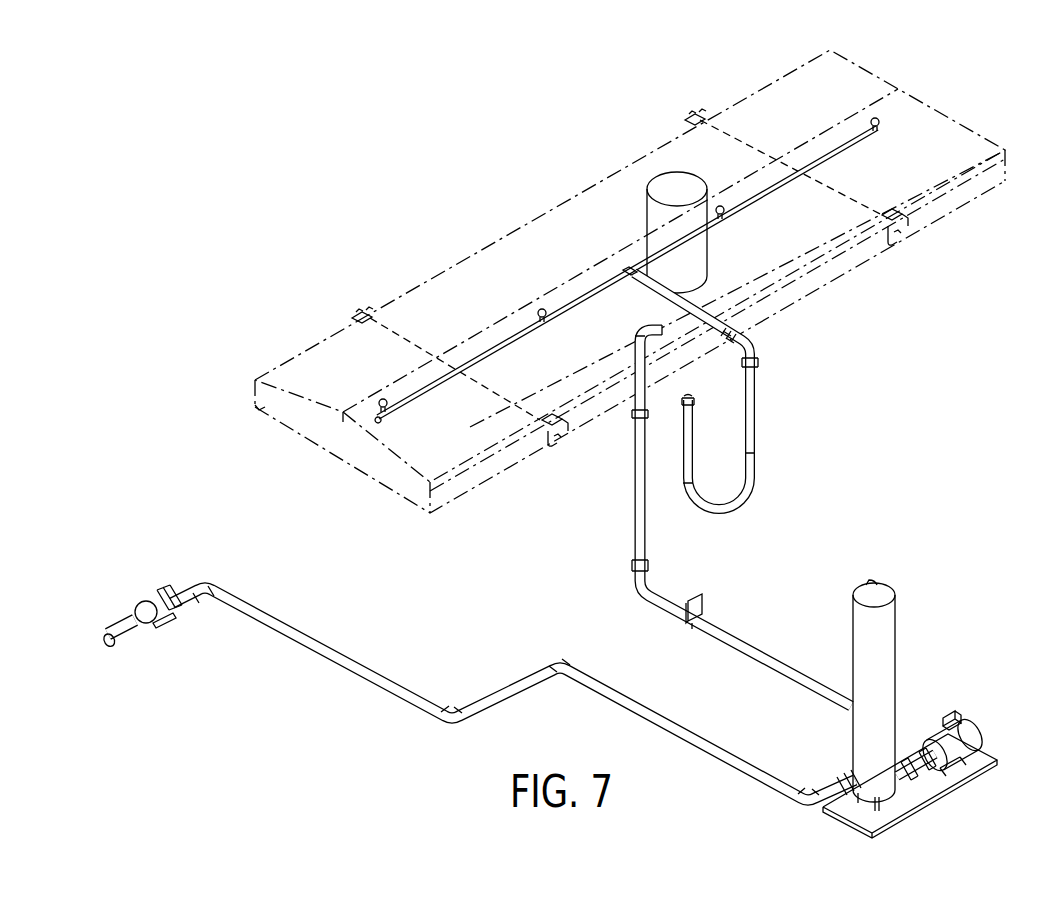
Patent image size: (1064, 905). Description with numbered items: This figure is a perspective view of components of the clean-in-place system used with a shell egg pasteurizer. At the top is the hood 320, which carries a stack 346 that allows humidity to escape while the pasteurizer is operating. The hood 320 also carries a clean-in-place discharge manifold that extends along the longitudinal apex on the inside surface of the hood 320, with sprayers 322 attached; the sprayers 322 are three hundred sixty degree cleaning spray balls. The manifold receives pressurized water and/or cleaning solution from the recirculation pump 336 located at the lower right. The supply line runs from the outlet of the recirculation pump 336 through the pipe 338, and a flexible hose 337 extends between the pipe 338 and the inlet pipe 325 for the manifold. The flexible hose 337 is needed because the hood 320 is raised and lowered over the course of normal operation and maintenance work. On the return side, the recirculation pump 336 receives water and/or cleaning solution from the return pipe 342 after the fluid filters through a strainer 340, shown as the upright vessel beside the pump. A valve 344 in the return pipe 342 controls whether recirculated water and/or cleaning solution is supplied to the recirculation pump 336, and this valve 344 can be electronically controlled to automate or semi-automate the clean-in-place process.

The hood 320 is at (827, 72).
The sprayers 322 is at (878, 118).
The inlet pipe 325 is at (717, 310).
The recirculation pump 336 is at (960, 740).
The flexible hose 337 is at (753, 423).
The pipe 338 is at (637, 497).
The strainer 340 is at (878, 648).
The return pipe 342 is at (397, 686).
The valve 344 is at (138, 608).
The stack 346 is at (645, 183).